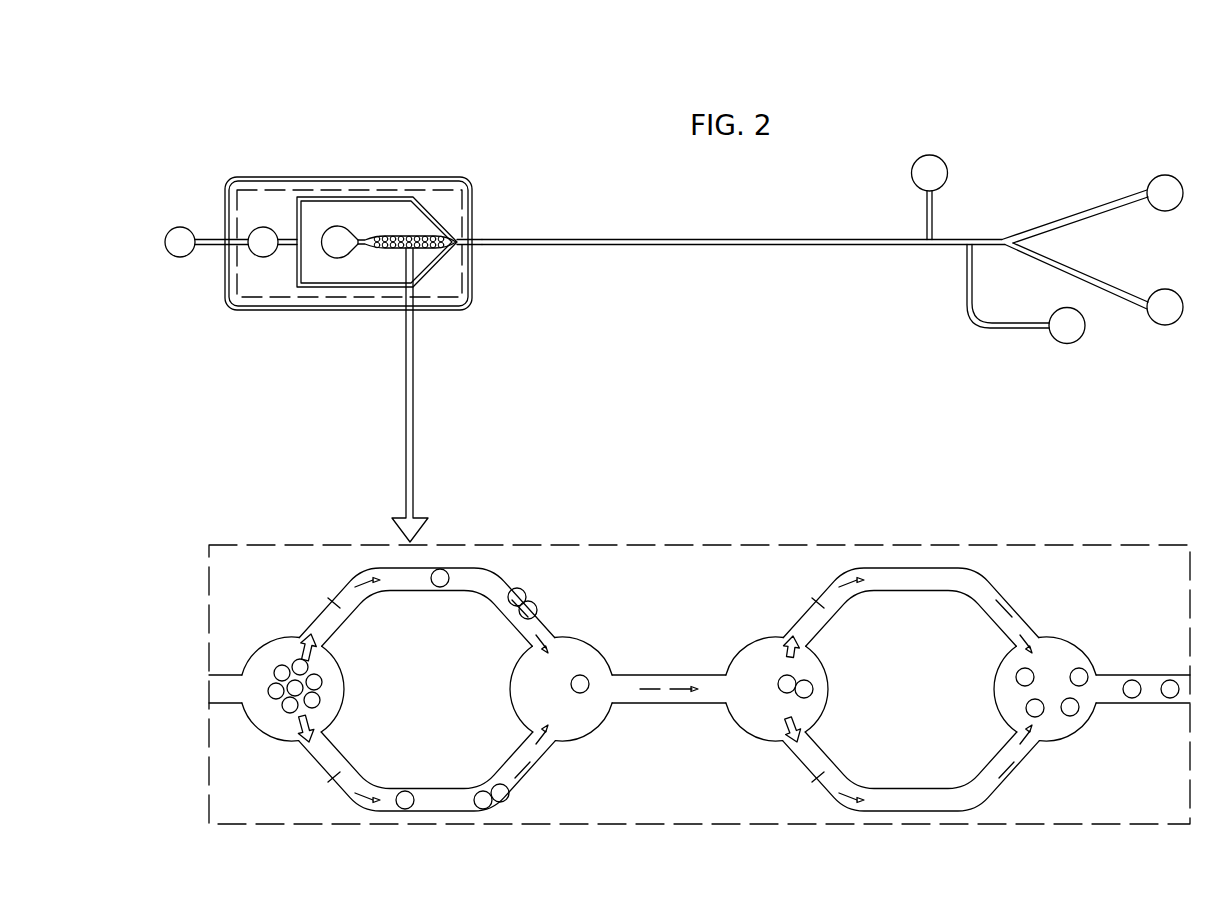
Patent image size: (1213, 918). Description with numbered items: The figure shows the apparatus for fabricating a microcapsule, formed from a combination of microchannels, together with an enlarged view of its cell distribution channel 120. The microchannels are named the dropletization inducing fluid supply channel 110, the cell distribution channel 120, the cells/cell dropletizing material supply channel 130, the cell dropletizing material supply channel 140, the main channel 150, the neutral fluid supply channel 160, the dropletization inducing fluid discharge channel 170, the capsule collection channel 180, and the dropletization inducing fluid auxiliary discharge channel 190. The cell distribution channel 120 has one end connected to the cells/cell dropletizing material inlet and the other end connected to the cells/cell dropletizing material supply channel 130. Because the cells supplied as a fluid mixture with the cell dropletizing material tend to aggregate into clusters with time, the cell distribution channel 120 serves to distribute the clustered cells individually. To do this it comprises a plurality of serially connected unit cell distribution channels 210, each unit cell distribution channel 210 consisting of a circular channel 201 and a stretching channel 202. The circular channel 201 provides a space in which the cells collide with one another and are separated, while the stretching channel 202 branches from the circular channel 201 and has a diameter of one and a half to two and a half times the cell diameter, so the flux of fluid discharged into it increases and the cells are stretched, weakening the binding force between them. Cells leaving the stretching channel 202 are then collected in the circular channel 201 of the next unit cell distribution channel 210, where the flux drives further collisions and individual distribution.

The dropletization inducing fluid supply channel 110 is at (248, 177).
The cell distribution channel 120 is at (420, 228).
The cells/cell dropletizing material supply channel 130 is at (468, 265).
The cell dropletizing material supply channel 140 is at (332, 287).
The main channel 150 is at (650, 237).
The neutral fluid supply channel 160 is at (923, 215).
The dropletization inducing fluid discharge channel 170 is at (1000, 330).
The capsule collection channel 180 is at (1087, 212).
The dropletization inducing fluid auxiliary discharge channel 190 is at (1115, 285).
The unit cell distribution channel 210 is at (382, 631).
The circular channel 201 is at (279, 647).
The stretching channel 202 is at (372, 573).